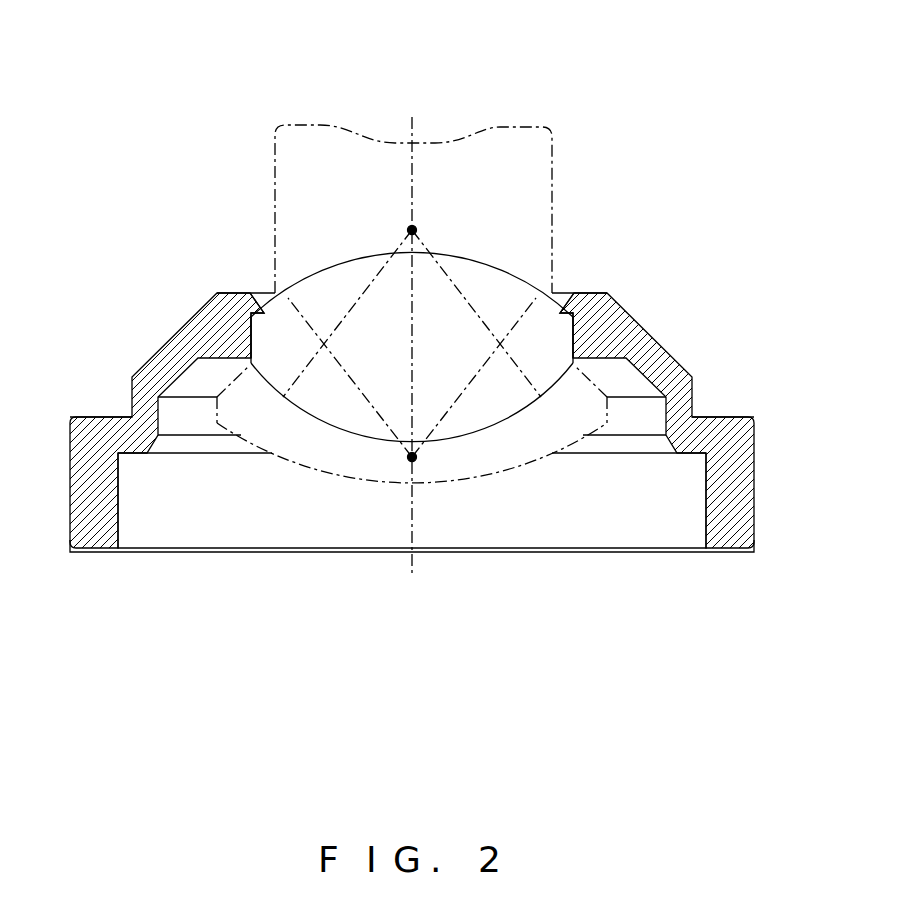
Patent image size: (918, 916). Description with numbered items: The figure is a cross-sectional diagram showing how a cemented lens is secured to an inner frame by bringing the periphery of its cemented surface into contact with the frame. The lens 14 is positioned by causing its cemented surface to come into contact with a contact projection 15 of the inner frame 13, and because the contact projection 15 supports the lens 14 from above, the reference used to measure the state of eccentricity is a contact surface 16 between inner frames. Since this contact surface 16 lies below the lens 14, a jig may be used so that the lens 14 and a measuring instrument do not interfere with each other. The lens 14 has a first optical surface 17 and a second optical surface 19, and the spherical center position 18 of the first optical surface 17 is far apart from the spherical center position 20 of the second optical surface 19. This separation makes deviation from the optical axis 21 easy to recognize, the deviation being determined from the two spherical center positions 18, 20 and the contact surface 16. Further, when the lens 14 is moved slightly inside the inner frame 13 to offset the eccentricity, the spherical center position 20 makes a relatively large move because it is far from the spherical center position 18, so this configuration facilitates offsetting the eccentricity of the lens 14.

The inner frame 13 is at (633, 343).
The lens 14 is at (484, 303).
The contact projection 15 is at (263, 313).
The contact surface 16 is at (108, 417).
The first optical surface 17 is at (320, 273).
The spherical center position 18 is at (415, 462).
The second optical surface 19 is at (325, 421).
The spherical center position 20 is at (414, 229).
The optical axis 21 is at (410, 560).